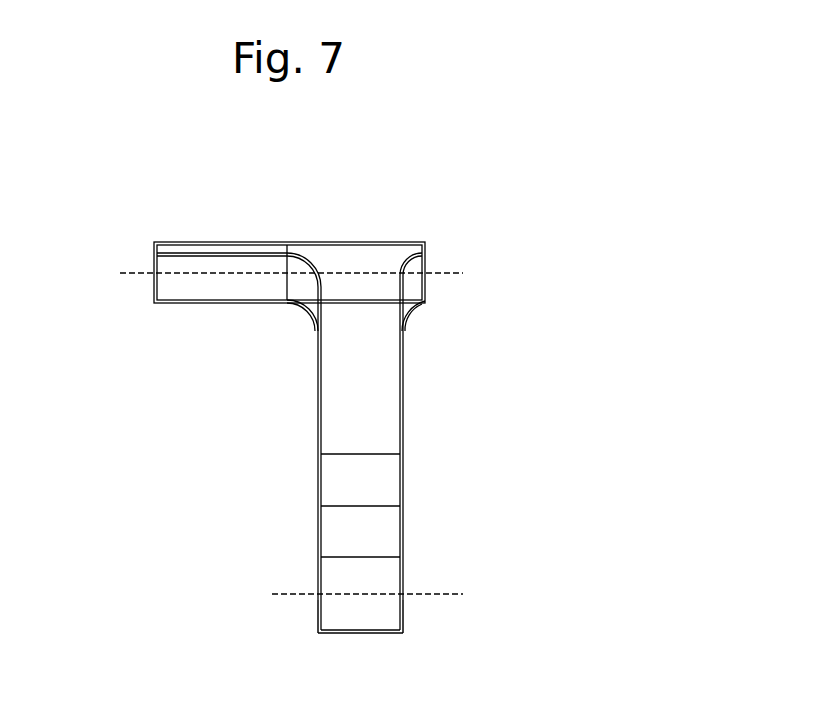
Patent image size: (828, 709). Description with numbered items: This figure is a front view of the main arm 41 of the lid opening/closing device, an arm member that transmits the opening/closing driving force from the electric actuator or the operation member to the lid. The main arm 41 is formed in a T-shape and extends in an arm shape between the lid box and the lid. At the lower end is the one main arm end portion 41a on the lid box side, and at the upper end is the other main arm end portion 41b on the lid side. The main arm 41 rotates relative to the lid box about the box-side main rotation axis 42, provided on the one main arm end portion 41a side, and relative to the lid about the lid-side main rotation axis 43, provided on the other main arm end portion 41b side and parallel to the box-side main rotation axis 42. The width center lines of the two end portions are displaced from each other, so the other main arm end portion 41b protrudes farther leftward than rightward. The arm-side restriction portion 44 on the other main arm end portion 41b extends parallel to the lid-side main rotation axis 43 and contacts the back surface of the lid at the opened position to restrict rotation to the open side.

The main arm 41 is at (365, 397).
The one main arm end portion 41a is at (318, 610).
The other main arm end portion 41b is at (188, 292).
The box-side main rotation axis 42 is at (440, 593).
The lid-side main rotation axis 43 is at (450, 272).
The arm-side restriction portion 44 is at (302, 252).